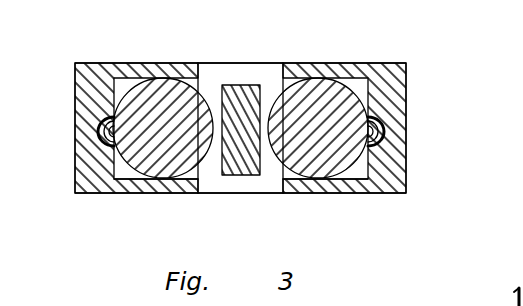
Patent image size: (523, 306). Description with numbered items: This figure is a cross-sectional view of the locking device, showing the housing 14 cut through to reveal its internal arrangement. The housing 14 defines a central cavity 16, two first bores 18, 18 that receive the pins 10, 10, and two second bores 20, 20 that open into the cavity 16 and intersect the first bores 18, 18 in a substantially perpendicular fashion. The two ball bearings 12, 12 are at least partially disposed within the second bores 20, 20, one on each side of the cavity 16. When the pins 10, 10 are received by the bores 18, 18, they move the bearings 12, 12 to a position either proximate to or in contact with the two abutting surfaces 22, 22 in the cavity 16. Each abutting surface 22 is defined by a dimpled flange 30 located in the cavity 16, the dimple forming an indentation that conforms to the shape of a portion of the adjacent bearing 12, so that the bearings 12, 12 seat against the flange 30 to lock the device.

The pin 10 is at (90, 97).
The ball bearing 12 is at (152, 172).
The housing 14 is at (392, 172).
The cavity 16 is at (218, 64).
The bore 18 is at (96, 134).
The bore 20 is at (118, 186).
The abutting surface 22 is at (268, 97).
The dimpled flange 30 is at (240, 92).